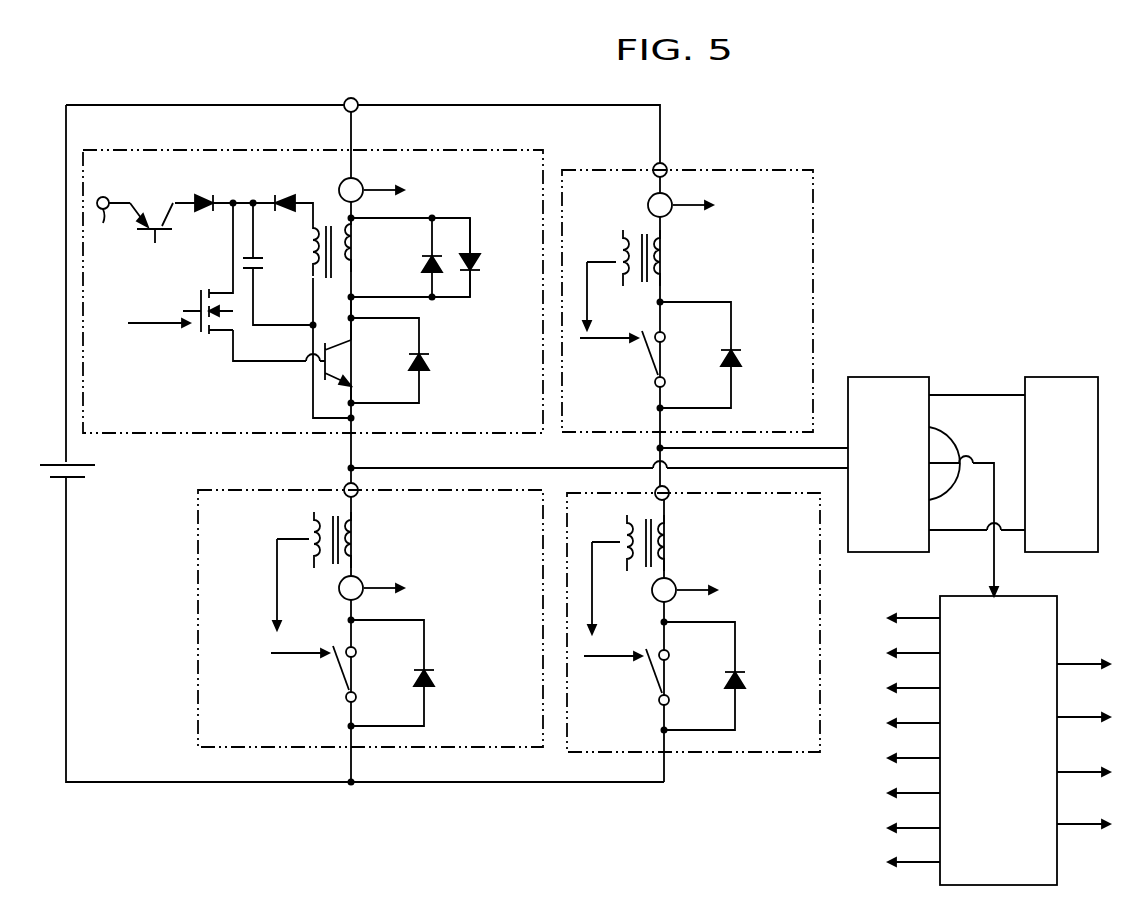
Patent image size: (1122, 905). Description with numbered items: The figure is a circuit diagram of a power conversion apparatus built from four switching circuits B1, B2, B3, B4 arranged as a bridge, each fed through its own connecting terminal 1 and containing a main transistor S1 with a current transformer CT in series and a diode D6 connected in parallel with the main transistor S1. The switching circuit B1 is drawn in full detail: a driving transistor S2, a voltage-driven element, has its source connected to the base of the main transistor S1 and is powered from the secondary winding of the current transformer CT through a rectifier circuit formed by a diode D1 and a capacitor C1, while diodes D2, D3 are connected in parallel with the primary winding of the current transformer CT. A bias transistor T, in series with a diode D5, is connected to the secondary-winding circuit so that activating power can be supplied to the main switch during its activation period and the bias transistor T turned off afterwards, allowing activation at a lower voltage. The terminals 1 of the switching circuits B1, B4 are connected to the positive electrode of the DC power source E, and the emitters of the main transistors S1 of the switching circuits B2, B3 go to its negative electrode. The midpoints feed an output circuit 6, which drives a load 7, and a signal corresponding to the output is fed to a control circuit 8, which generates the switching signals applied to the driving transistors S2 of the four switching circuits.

The connecting terminal 1 is at (357, 112).
The output circuit 6 is at (903, 335).
The load 7 is at (1075, 385).
The control circuit 8 is at (1035, 632).
The bias transistor T is at (161, 215).
The diode D1 is at (287, 197).
The diode D2 is at (422, 264).
The diode D3 is at (484, 262).
The diode D5 is at (207, 216).
The diode D6 is at (440, 364).
The main transistor S1 is at (340, 348).
The driving transistor S2 is at (200, 298).
The capacitor C1 is at (260, 274).
The current transformer CT is at (334, 217).
The DC power source E is at (88, 463).
The switching circuit B1 is at (198, 440).
The switching circuit B2 is at (192, 624).
The switching circuit B3 is at (712, 762).
The switching circuit B4 is at (820, 250).